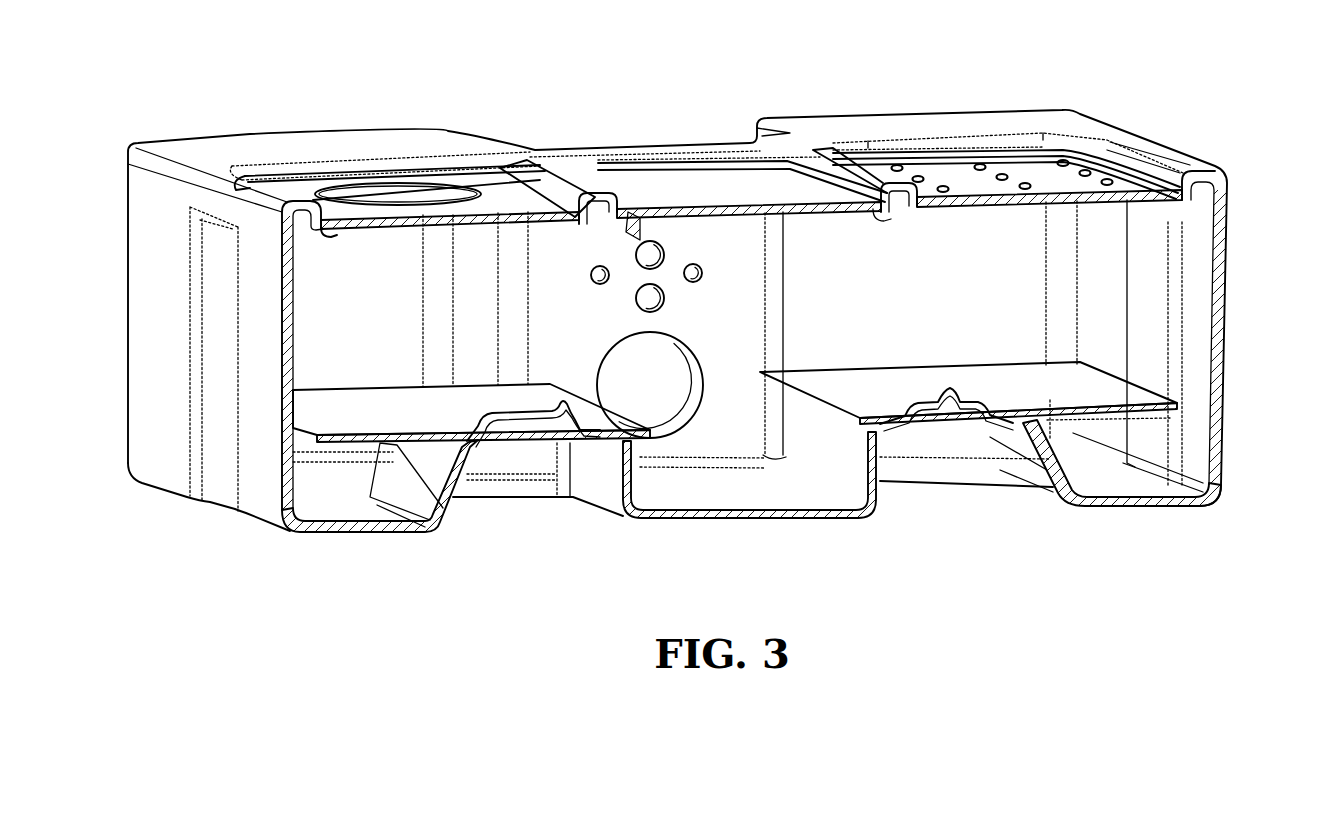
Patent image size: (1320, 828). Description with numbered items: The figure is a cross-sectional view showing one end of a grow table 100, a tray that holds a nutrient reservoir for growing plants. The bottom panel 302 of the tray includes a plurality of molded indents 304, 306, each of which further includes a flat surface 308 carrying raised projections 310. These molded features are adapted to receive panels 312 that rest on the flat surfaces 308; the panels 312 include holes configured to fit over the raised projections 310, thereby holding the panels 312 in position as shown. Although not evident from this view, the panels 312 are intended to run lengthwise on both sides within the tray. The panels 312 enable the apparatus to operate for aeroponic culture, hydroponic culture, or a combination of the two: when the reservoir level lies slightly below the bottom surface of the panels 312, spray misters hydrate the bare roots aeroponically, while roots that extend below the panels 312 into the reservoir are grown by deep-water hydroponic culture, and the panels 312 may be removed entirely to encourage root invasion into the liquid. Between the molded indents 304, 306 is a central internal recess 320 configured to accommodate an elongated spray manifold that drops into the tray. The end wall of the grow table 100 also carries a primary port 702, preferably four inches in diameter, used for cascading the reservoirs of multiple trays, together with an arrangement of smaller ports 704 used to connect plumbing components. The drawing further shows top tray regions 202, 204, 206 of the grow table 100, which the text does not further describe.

The grow table 100 is at (187, 600).
The first top tray portion with vent holes 202 is at (952, 187).
The second top tray portion 204 is at (713, 185).
The third top tray portion with oval recess 206 is at (493, 198).
The bottom panel 302 is at (753, 522).
The molded indent 304 is at (520, 527).
The molded indent 306 is at (983, 505).
The flat surface 308 is at (437, 443).
The raised projection 310 is at (560, 415).
The panel 312 is at (345, 432).
The recess 320 is at (863, 477).
The primary port 702 is at (653, 365).
The smaller ports 704 is at (640, 238).